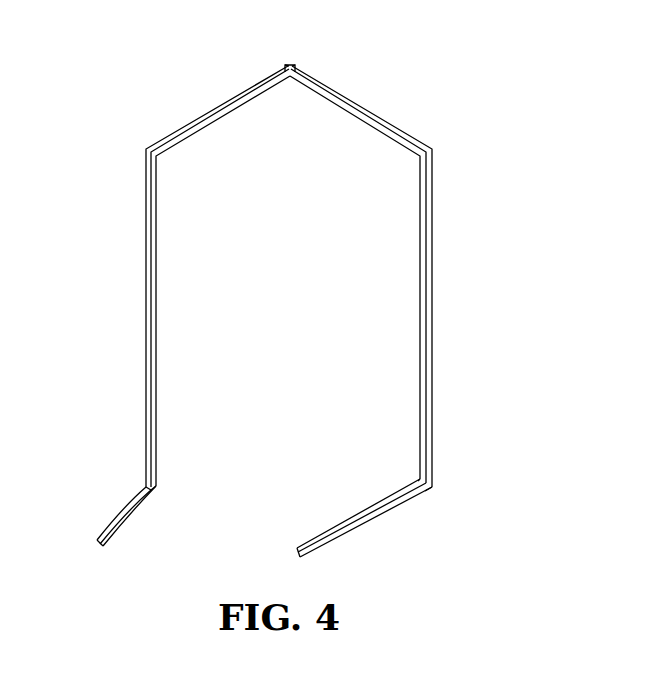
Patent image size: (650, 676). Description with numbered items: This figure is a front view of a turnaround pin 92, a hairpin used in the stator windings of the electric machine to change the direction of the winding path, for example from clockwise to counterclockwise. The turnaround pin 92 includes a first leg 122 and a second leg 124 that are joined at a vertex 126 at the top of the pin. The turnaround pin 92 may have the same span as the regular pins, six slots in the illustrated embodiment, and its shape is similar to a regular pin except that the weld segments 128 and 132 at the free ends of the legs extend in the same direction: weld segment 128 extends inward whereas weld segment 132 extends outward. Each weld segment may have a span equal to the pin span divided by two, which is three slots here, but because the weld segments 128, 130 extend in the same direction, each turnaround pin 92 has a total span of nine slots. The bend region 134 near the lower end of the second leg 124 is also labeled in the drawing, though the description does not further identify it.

The turnaround pin 92 is at (266, 293).
The first leg 122 is at (427, 292).
The second leg 124 is at (153, 330).
The vertex 126 is at (288, 64).
The weld segment 128 is at (366, 520).
The weld segment 130 is at (418, 478).
The weld segment 132 is at (126, 502).
The first bend 134 is at (156, 489).